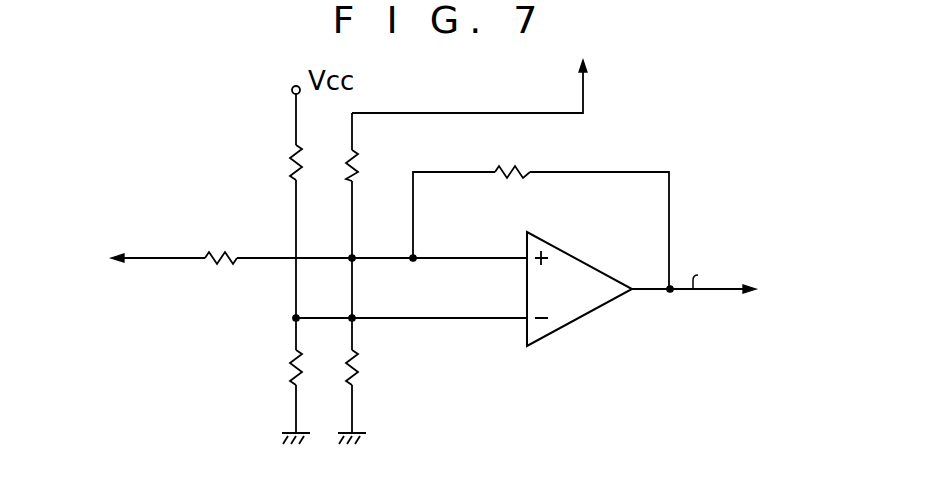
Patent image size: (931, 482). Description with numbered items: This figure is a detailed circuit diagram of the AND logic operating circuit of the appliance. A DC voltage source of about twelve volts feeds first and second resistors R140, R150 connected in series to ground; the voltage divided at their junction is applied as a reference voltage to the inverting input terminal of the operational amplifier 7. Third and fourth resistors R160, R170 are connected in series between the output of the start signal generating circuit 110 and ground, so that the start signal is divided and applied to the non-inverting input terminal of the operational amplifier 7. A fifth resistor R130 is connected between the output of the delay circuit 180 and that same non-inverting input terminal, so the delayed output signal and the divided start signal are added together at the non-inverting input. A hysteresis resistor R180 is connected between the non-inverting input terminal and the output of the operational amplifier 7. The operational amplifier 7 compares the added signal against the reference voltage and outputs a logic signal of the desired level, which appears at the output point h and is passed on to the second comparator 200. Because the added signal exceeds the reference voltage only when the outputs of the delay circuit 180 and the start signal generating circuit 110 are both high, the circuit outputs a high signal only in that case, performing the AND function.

The start signal generating circuit 110 is at (501, 86).
The delay circuit 180 is at (151, 280).
The second comparator 200 is at (728, 276).
The fifth resistor R130 is at (230, 239).
The first resistor R140 is at (273, 161).
The second resistor R150 is at (272, 367).
The third resistor R160 is at (379, 160).
The fourth resistor R170 is at (384, 370).
The hysteresis resistor R180 is at (541, 210).
The operational amplifier OP7 7 is at (579, 289).